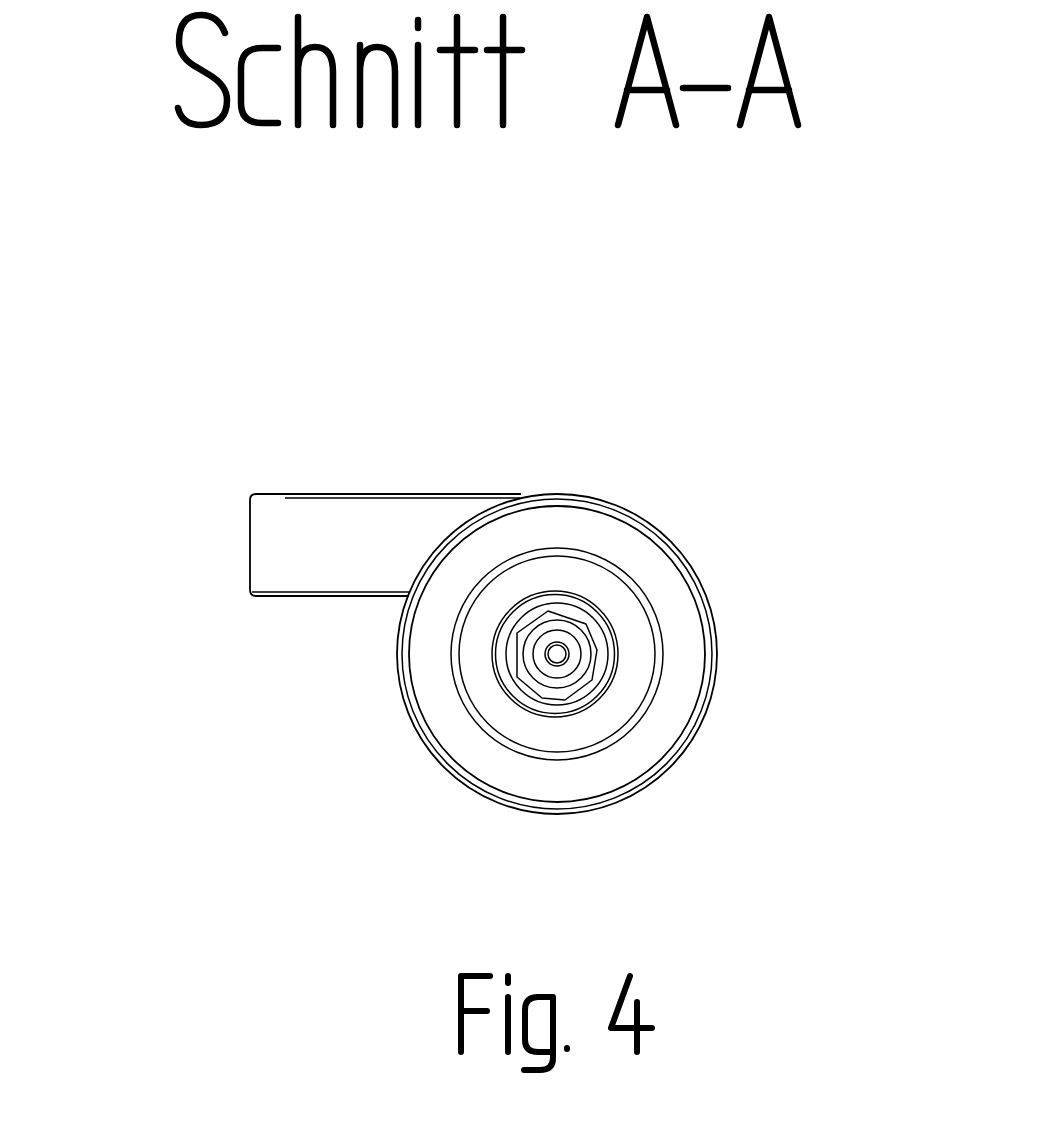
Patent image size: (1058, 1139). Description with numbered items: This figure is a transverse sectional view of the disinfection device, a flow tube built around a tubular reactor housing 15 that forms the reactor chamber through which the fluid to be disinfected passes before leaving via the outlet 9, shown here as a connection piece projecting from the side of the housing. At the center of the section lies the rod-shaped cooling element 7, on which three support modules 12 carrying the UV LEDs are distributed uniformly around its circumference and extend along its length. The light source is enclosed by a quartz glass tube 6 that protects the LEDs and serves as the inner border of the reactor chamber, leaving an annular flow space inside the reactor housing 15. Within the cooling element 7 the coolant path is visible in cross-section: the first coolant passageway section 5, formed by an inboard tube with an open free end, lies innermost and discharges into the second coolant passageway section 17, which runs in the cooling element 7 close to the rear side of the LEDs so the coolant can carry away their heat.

The first coolant passageway section 5 is at (568, 656).
The quartz glass tube 6 is at (533, 713).
The cooling element 7 is at (593, 645).
The outlet 9 is at (315, 539).
The support module 12 is at (517, 643).
The reactor housing 15 is at (405, 690).
The second coolant passageway section 17 is at (558, 628).